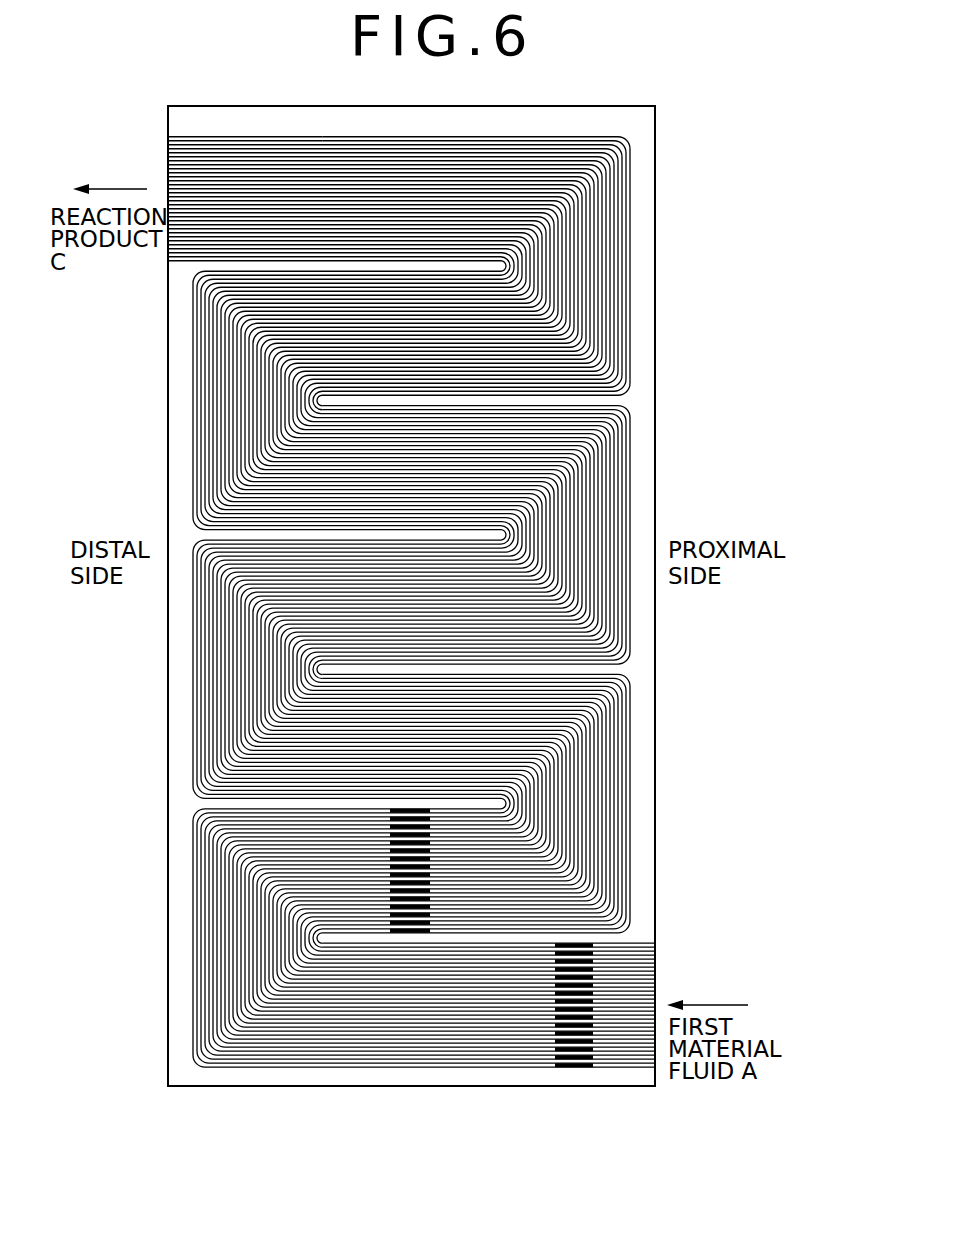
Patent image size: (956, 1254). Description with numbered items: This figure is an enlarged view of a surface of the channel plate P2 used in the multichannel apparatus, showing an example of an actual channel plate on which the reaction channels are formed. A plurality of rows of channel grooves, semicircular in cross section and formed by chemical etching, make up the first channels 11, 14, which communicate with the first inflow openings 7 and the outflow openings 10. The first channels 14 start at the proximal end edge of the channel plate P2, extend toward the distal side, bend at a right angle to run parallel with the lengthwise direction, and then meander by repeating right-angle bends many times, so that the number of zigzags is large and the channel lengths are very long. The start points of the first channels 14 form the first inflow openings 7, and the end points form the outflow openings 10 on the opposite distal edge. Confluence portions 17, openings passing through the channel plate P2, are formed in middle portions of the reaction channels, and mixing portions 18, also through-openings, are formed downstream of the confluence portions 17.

The outflow opening 10 is at (168, 139).
The first channel 11 is at (630, 295).
The first channel 14 is at (411, 602).
The channel plate P2 is at (640, 173).
The confluence portion 17 is at (583, 942).
The mixing portion 18 is at (401, 935).
The first inflow opening 7 is at (657, 946).